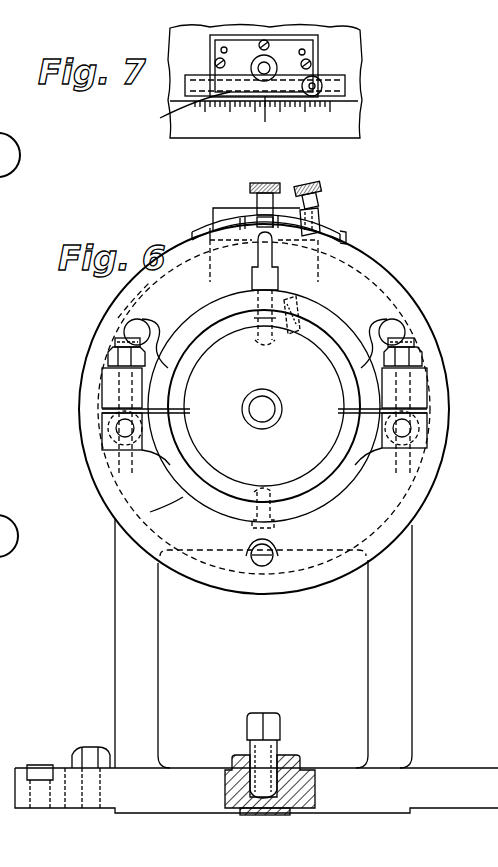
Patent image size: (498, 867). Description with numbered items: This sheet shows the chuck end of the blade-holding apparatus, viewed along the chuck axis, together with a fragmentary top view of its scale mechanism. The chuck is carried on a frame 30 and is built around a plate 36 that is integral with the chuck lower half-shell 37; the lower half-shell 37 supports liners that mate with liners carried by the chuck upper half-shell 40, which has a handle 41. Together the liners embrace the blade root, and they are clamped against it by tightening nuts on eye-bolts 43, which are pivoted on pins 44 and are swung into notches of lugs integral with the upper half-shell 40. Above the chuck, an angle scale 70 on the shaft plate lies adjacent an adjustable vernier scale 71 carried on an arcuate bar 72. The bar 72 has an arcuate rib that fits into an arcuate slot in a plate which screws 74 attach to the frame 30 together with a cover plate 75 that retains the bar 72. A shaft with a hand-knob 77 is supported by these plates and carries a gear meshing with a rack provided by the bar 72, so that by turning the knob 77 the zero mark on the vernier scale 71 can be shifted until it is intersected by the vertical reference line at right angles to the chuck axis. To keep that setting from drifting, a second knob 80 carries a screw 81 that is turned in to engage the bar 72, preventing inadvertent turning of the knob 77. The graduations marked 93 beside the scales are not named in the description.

In FIG. 7, the frame 30 is at (348, 50).
In FIG. 6, the frame 30 is at (115, 666).
In FIG. 6, the plate 36 is at (80, 392).
In FIG. 6, the chuck lower half-shell 37 is at (154, 510).
In FIG. 6, the chuck upper half-shell 40 is at (205, 300).
In FIG. 6, the handle 41 is at (260, 269).
In FIG. 6, the eye-bolts 43 is at (128, 338).
In FIG. 6, the pins 44 is at (120, 432).
In FIG. 7, the angle scale 70 is at (287, 104).
In FIG. 7, the vernier scale 71 is at (162, 116).
In FIG. 7, the arcuate bar 72 is at (346, 84).
In FIG. 6, the arcuate bar 72 is at (194, 234).
In FIG. 7, the screws 74 is at (215, 63).
In FIG. 6, the cover plate 75 is at (222, 208).
In FIG. 7, the hand-knob 77 is at (262, 40).
In FIG. 6, the hand-knob 77 is at (262, 184).
In FIG. 6, the knob 80 is at (313, 186).
In FIG. 6, the screw 81 is at (321, 210).
In FIG. 7, the scale graduations 93 is at (350, 118).